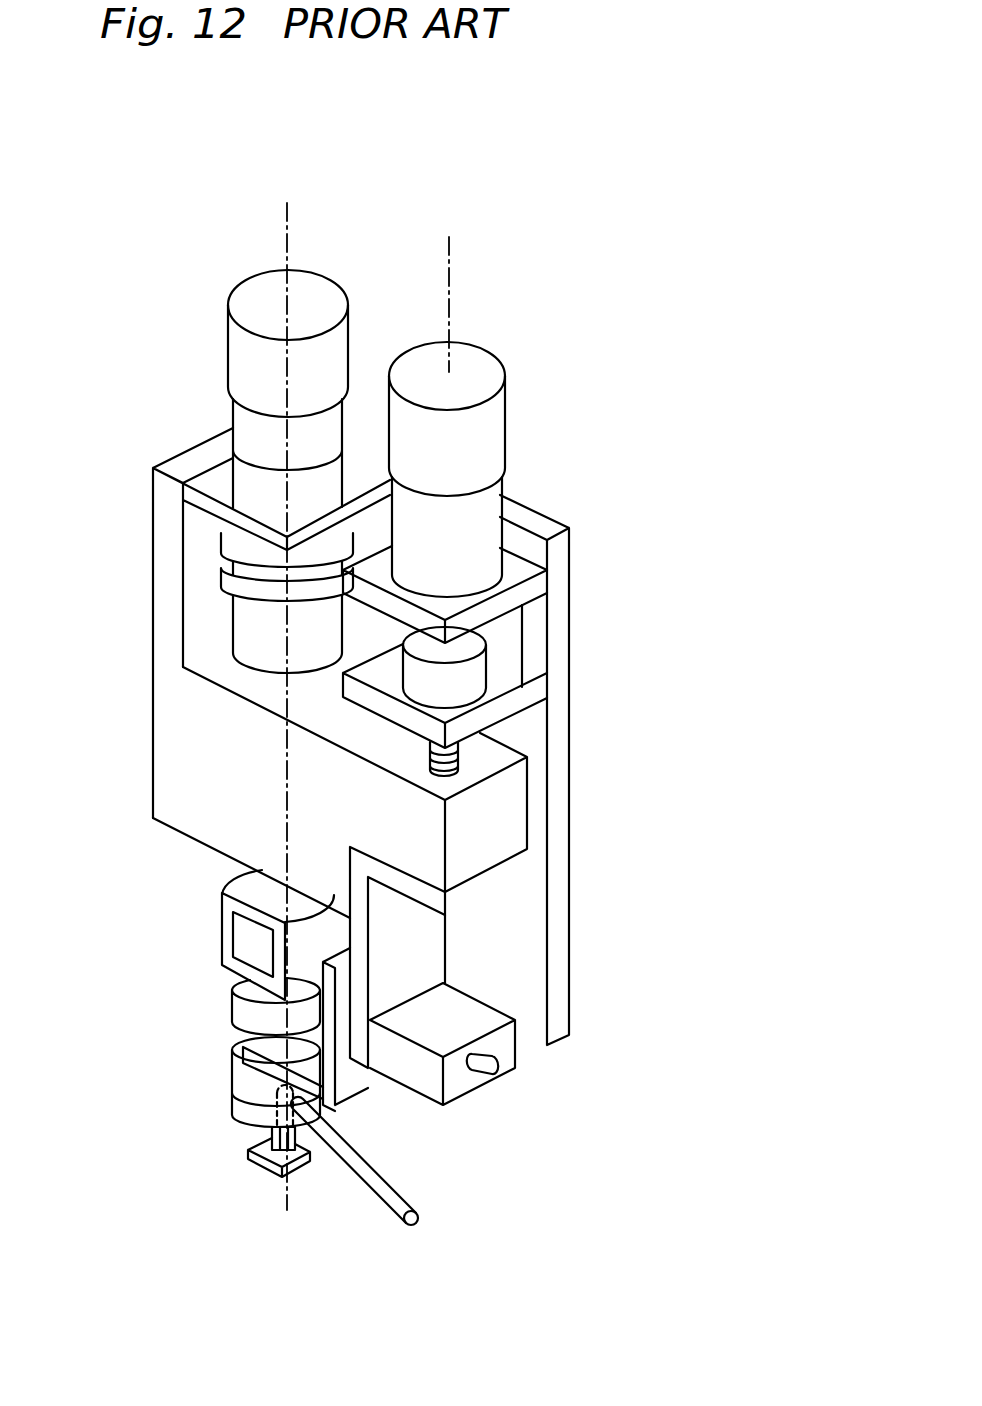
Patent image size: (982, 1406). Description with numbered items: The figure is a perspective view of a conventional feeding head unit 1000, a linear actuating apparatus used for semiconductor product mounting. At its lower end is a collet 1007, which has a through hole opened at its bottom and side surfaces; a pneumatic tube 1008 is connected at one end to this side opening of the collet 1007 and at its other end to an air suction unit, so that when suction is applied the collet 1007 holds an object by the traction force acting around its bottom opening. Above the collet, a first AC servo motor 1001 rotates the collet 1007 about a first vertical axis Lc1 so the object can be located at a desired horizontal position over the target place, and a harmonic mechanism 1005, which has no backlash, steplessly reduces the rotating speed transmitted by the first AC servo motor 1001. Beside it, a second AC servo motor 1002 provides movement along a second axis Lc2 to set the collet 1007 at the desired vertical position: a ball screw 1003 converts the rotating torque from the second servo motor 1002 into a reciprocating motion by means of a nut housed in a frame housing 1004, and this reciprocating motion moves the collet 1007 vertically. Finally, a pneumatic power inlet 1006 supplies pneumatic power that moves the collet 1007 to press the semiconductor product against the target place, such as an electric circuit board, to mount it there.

The feeding head unit 1000 is at (672, 414).
The first AC servo motor 1001 is at (325, 298).
The second AC servo motor 1002 is at (485, 363).
The ball screw 1003 is at (453, 748).
The frame housing 1004 is at (507, 822).
The harmonic mechanism 1005 is at (245, 477).
The pneumatic power inlet 1006 is at (463, 1083).
The collet 1007 is at (258, 1143).
The pneumatic tube 1008 is at (398, 1196).
The first vertical axis Lc1 is at (294, 220).
The second axis Lc2 is at (451, 257).